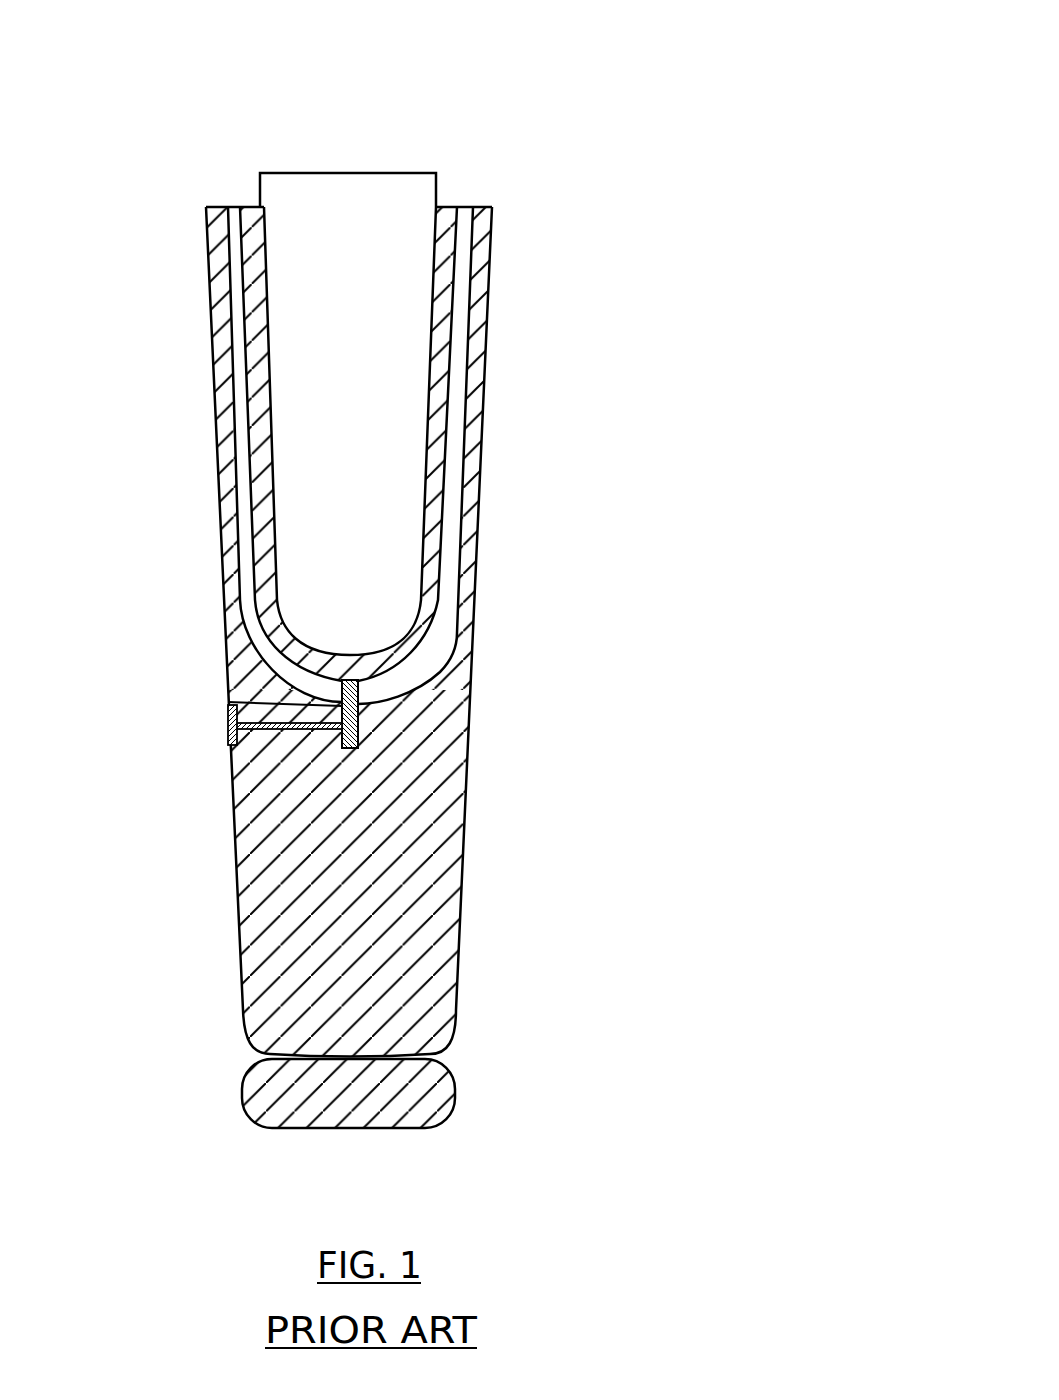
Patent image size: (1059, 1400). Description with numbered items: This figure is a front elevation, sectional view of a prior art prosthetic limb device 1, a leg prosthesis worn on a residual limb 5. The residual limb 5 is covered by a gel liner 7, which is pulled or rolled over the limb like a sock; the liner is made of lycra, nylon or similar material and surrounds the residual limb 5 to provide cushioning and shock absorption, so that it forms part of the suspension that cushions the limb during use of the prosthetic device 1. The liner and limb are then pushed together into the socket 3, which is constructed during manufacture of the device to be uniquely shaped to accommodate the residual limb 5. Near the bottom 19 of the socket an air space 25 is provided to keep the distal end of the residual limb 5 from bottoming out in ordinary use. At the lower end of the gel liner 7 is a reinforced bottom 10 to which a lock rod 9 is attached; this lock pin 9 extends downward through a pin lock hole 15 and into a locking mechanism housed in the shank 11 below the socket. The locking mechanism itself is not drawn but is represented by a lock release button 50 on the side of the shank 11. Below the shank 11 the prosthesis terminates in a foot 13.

The prosthetic limb device 1 is at (388, 564).
The socket 3 is at (465, 202).
The residual limb 5 is at (356, 427).
The gel liner 7 is at (455, 444).
The lock rod 9 is at (358, 723).
The reinforced bottom 10 is at (323, 663).
The shank 11 is at (445, 918).
The foot 13 is at (437, 1100).
The pin lock hole 15 is at (228, 702).
The bottom of socket 19 is at (358, 702).
The air space 25 is at (433, 653).
The lock release button 50 is at (228, 722).